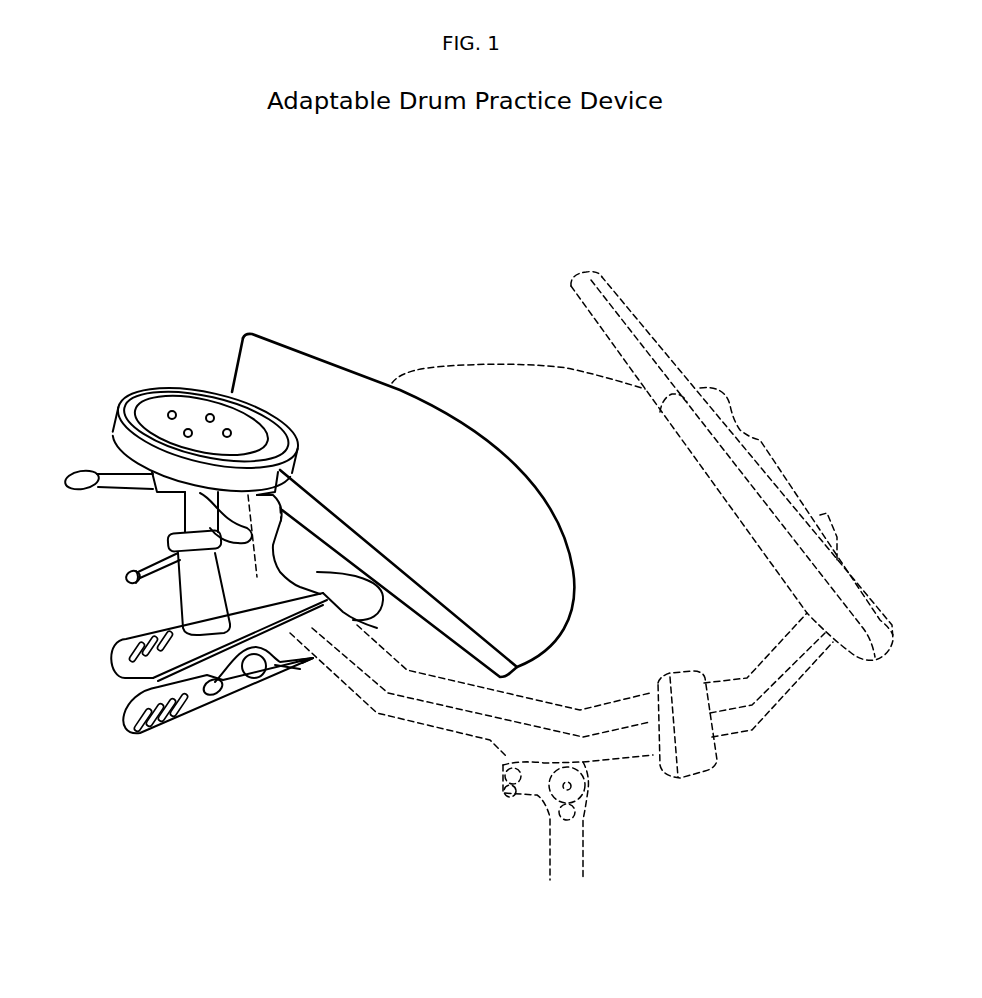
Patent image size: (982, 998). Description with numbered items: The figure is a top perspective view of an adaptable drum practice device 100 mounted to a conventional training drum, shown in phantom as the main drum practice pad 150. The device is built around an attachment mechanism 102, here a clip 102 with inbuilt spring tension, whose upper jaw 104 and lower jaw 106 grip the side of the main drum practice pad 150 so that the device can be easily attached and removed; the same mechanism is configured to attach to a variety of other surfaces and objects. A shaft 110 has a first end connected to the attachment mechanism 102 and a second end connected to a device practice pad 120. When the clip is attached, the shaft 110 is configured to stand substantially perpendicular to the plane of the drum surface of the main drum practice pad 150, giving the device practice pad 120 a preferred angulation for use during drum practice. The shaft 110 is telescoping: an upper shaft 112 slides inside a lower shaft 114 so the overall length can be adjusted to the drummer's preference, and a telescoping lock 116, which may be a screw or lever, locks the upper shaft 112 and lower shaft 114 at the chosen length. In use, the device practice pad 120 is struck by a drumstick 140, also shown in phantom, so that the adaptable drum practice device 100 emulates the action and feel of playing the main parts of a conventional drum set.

The adaptable drum practice device 100 is at (170, 312).
The attachment mechanism 102 is at (266, 700).
The upper jaw 104 is at (352, 572).
The lower jaw 106 is at (313, 660).
The shaft 110 is at (103, 635).
The upper shaft 112 is at (173, 515).
The lower shaft 114 is at (173, 588).
The telescoping lock 116 is at (118, 577).
The device practice pad 120 is at (313, 354).
The drumstick 140 is at (675, 345).
The main drum practice pad 150 is at (440, 362).